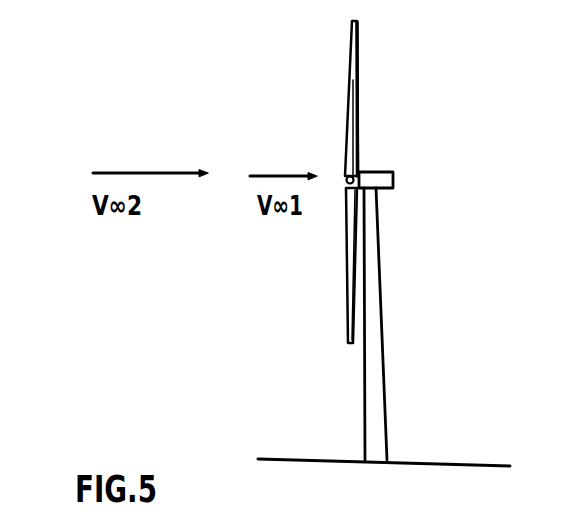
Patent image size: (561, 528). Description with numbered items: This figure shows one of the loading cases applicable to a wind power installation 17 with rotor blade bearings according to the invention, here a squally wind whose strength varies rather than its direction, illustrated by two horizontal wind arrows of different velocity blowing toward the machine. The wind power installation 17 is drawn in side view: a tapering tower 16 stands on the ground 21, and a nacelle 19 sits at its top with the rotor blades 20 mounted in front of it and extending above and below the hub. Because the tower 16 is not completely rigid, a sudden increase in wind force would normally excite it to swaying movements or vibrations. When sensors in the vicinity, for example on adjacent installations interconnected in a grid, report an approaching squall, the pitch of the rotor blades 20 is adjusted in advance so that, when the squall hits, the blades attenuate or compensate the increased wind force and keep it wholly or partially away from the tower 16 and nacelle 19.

The tower 16 is at (378, 278).
The wind power installation 17 is at (360, 182).
The nacelle 19 is at (394, 180).
The rotor blade 20 is at (353, 89).
The ground 21 is at (442, 461).